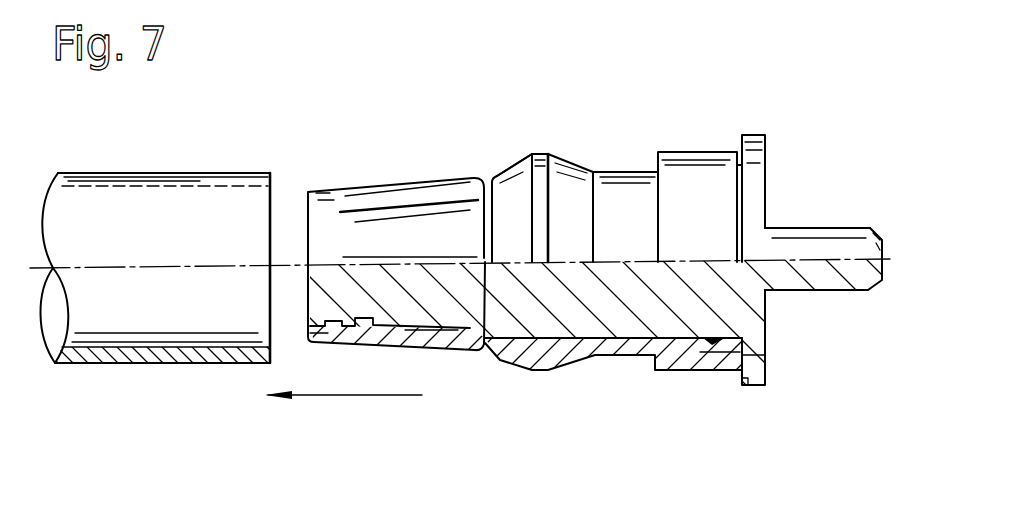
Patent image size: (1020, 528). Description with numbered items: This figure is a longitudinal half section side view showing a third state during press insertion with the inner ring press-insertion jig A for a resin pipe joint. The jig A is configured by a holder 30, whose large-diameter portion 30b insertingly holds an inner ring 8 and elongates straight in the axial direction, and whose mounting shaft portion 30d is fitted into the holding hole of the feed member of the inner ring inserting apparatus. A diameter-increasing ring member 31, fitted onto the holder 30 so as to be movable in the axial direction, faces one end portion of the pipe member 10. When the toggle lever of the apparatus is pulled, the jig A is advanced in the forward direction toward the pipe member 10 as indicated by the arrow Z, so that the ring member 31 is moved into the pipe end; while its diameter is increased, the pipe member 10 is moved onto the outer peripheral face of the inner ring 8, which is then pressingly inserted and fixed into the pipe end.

The pipe member 10 is at (131, 177).
The diameter-increasing ring member 31 is at (346, 193).
The holder 30 is at (607, 302).
The mounting shaft portion 30d is at (833, 290).
The large-diameter portion 30b is at (630, 327).
The inner ring 8 is at (552, 371).
The inner ring press-insertion jig A is at (508, 156).
The arrow z Z is at (343, 405).